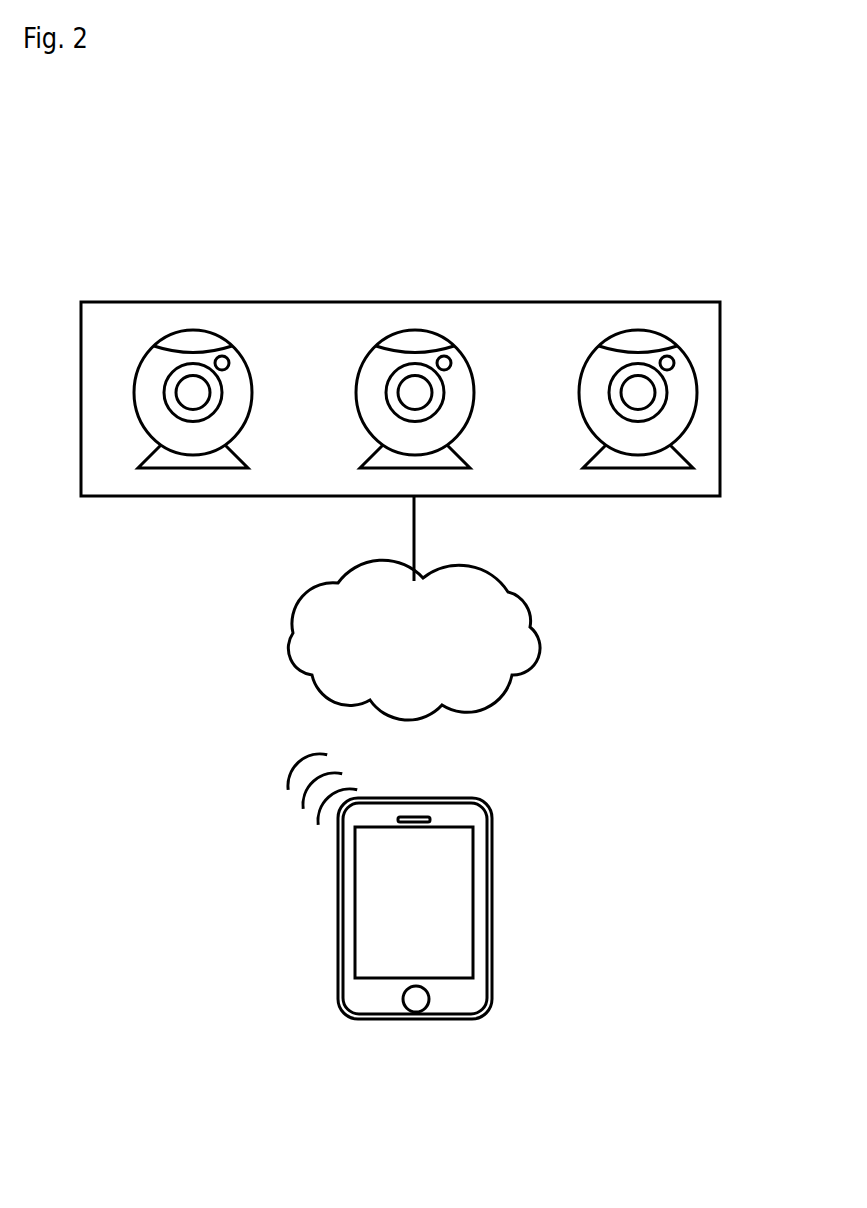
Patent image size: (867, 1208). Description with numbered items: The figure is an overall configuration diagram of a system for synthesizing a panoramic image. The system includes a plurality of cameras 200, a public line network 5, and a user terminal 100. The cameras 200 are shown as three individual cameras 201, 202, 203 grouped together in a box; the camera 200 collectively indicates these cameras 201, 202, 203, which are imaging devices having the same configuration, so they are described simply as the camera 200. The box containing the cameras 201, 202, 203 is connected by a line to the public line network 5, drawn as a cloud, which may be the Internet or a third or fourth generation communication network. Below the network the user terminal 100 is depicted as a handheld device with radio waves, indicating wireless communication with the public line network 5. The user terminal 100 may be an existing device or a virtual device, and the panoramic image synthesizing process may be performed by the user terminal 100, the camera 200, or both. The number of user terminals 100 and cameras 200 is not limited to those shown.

The camera 200 is at (713, 322).
The camera 201 is at (238, 377).
The camera 202 is at (460, 377).
The camera 203 is at (683, 377).
The public line network 5 is at (535, 615).
The user terminal 100 is at (483, 812).